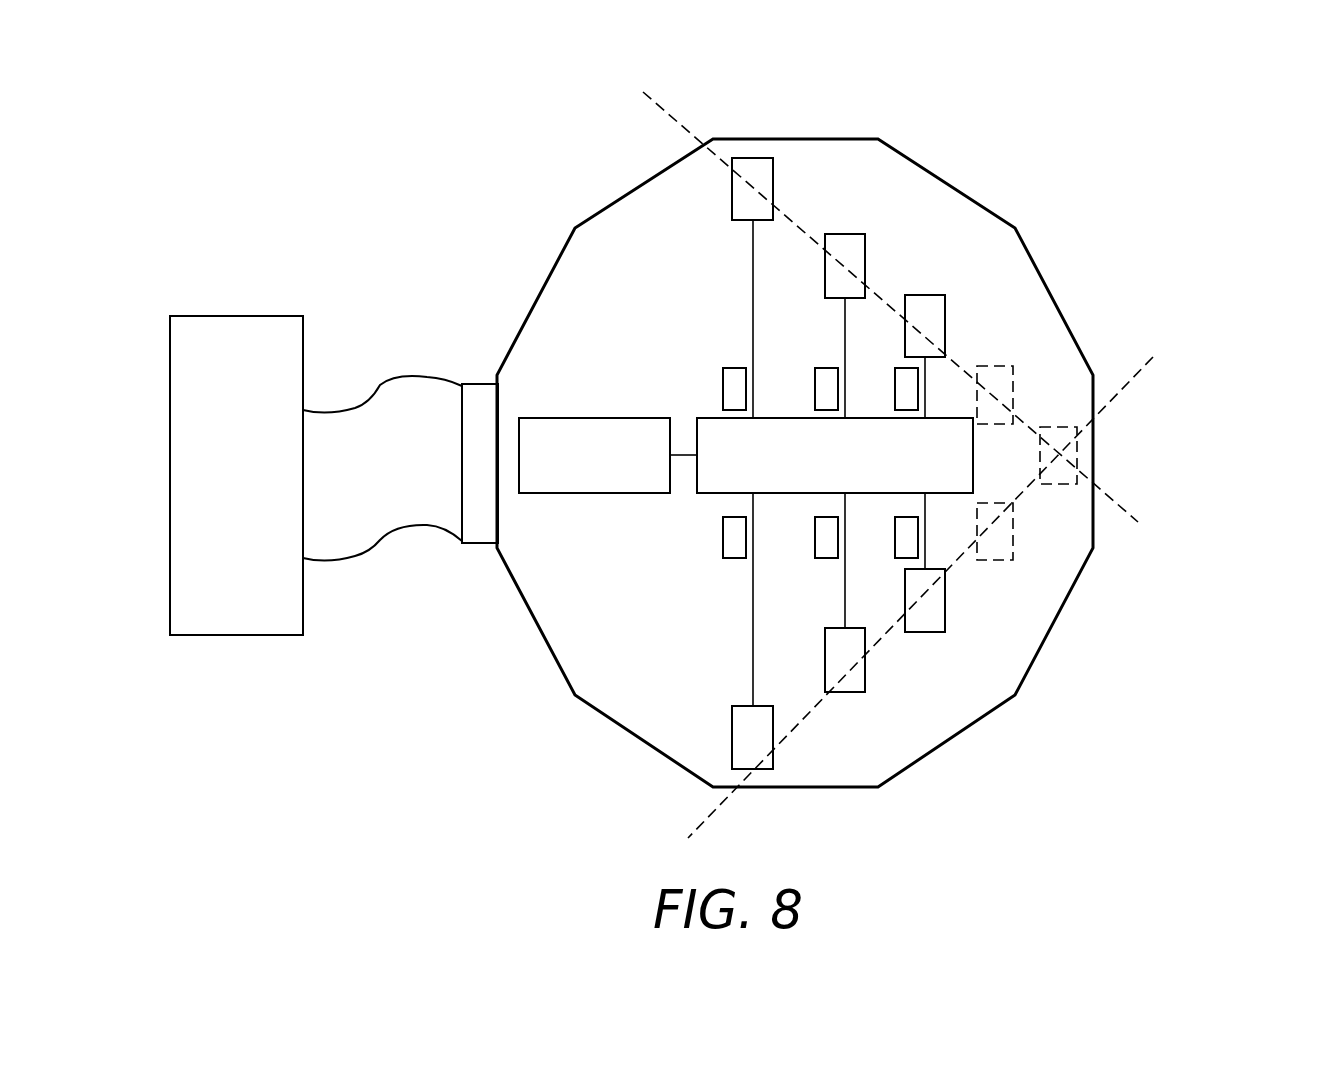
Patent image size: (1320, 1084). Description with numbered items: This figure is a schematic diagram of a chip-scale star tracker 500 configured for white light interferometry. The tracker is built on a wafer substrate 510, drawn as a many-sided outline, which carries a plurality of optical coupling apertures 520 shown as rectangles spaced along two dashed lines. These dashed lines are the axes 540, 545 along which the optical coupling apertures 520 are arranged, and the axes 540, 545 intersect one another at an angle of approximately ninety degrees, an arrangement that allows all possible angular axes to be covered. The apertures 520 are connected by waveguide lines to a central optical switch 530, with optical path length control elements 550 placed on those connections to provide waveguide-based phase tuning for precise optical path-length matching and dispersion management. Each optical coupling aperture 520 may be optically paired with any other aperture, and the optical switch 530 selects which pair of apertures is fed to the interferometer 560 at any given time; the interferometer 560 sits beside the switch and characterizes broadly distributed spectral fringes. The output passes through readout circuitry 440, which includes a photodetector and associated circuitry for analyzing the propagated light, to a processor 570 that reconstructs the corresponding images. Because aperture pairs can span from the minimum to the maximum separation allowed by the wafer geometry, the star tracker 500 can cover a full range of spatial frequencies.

The chip-scale star tracker 500 is at (460, 146).
The wafer substrate 510 is at (1052, 630).
The optical coupling apertures 520 is at (762, 158).
The optical switch 530 is at (715, 418).
The axis 540 is at (1133, 375).
The axis 545 is at (1113, 500).
The optical path length control elements 550 is at (815, 552).
The interferometer 560 is at (630, 418).
The processor 570 is at (258, 313).
The readout circuitry 440 is at (393, 378).